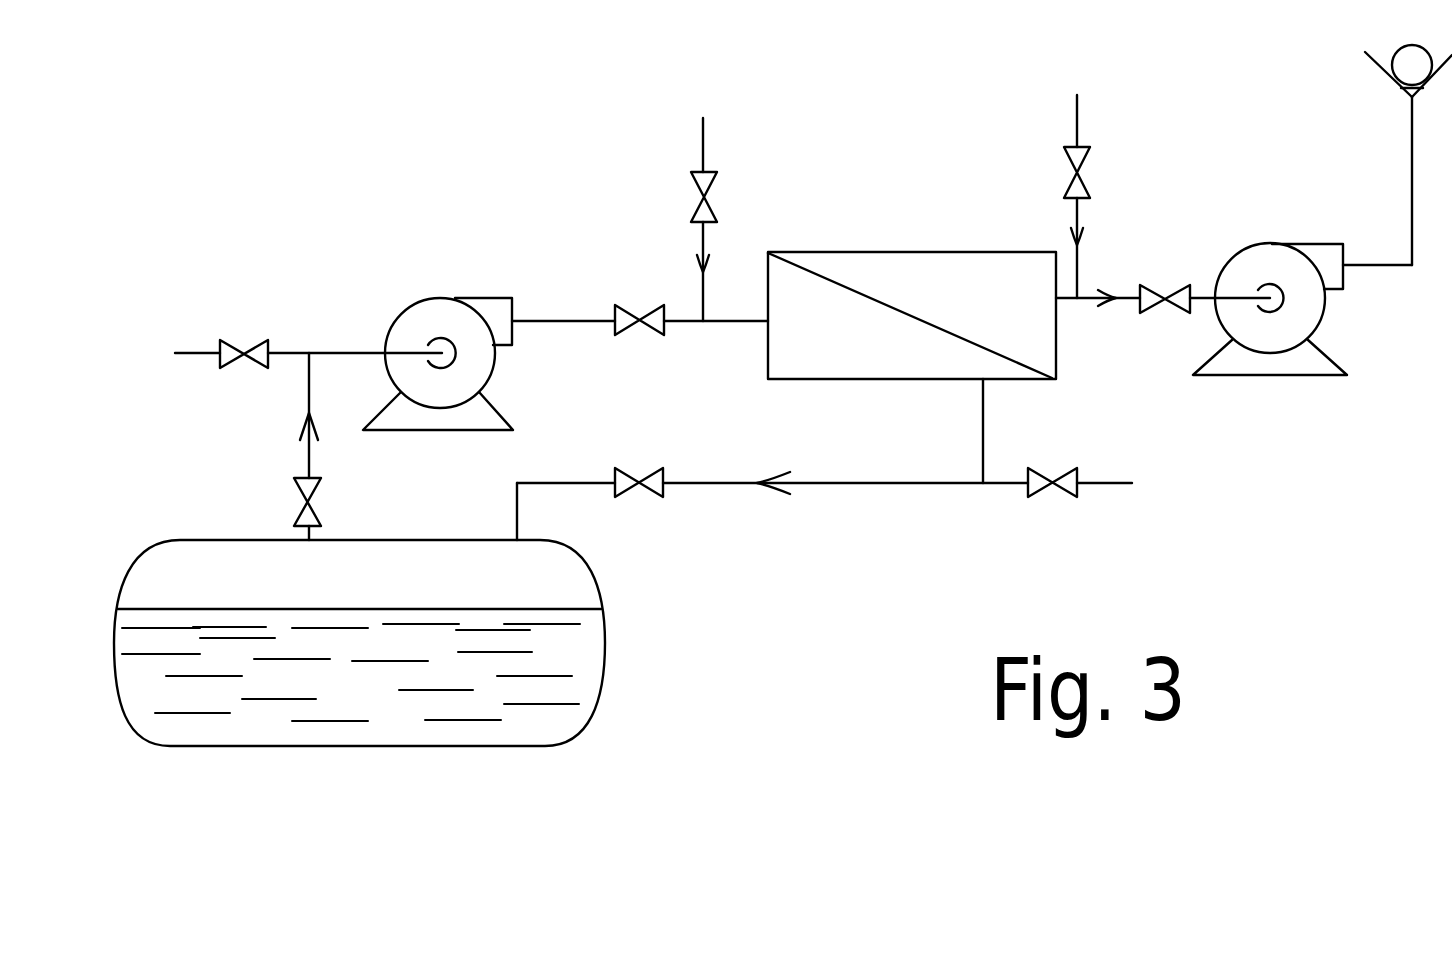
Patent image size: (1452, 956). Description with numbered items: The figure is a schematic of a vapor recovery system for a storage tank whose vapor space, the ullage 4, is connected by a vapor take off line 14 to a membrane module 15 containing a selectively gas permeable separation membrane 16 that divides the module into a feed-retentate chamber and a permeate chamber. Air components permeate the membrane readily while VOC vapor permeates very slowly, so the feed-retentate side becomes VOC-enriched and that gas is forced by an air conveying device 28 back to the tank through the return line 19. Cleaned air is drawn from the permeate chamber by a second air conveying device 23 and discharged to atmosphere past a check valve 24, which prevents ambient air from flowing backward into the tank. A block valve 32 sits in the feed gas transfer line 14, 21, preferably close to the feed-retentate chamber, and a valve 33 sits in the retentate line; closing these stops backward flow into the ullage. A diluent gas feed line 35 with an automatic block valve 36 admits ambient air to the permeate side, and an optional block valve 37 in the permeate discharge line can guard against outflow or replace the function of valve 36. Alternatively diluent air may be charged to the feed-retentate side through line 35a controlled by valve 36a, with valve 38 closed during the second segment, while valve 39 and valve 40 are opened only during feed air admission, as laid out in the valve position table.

The ullage 4 is at (560, 595).
The vapor take off line 14 is at (360, 350).
The membrane module 15 is at (817, 252).
The selectively gas permeable separation membrane 16 is at (912, 313).
The return line 19 is at (893, 485).
The feed gas transfer line 21 is at (535, 318).
The air conveying device 23 is at (1260, 242).
The check valve 24 is at (1392, 76).
The air conveying device 28 is at (405, 308).
The block valve 32 is at (618, 305).
The valve 33 is at (662, 468).
The diluent gas feed line 35 is at (1077, 123).
The diluent gas line 35a is at (700, 147).
The automatic block valve 36 is at (1090, 152).
The valve 36a is at (713, 208).
The block valve 37 is at (1160, 287).
The valve 38 is at (321, 500).
The valve 39 is at (1078, 467).
The valve 40 is at (222, 363).